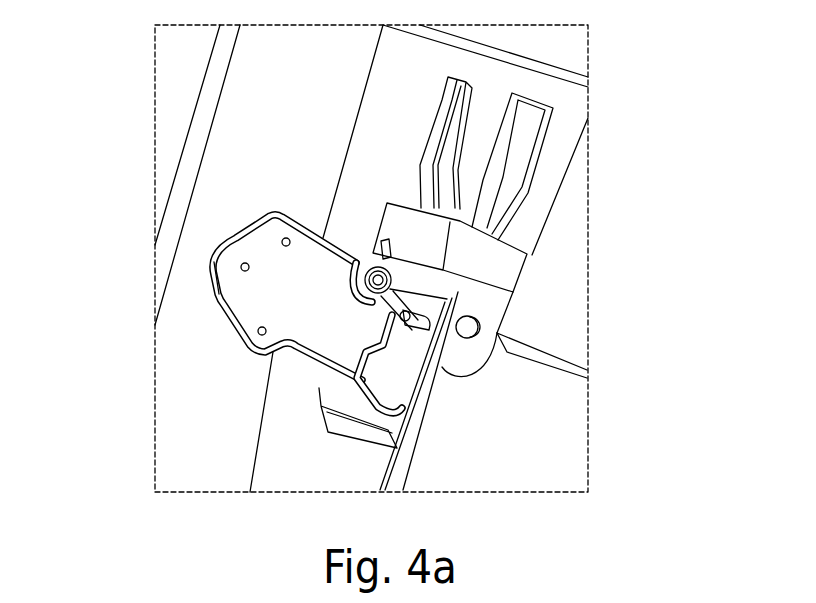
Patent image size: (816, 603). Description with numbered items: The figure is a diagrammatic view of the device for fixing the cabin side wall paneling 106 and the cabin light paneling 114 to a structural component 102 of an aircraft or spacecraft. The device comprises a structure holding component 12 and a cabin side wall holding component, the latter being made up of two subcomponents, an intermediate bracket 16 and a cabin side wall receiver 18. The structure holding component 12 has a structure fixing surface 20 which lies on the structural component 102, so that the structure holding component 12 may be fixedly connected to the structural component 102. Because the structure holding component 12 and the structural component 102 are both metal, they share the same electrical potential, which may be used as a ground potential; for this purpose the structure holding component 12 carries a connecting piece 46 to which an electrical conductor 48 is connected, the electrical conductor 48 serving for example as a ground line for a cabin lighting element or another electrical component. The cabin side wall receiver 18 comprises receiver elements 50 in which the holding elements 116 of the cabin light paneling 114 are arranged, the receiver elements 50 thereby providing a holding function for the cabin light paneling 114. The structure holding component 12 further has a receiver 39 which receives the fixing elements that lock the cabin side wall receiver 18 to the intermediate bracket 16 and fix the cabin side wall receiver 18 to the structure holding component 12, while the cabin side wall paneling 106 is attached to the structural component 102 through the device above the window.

The structural component 102 is at (210, 88).
The cabin light paneling 114 is at (567, 102).
The holding elements 116 is at (547, 120).
The receiver elements 50 is at (396, 207).
The structure holding component 12 is at (257, 293).
The structure fixing surface 20 is at (222, 329).
The connecting piece 46 is at (365, 268).
The electrical conductor 48 is at (388, 226).
The receiver 39 is at (395, 303).
The intermediate bracket 16 is at (348, 428).
The cabin side wall receiver 18 is at (469, 368).
The cabin side wall paneling 106 is at (565, 450).